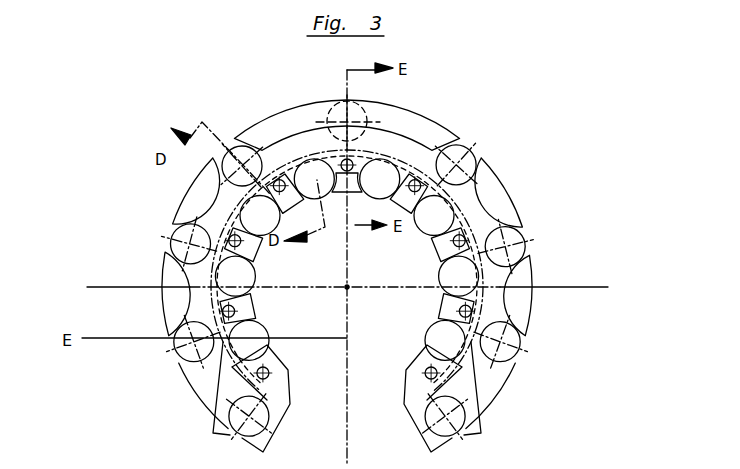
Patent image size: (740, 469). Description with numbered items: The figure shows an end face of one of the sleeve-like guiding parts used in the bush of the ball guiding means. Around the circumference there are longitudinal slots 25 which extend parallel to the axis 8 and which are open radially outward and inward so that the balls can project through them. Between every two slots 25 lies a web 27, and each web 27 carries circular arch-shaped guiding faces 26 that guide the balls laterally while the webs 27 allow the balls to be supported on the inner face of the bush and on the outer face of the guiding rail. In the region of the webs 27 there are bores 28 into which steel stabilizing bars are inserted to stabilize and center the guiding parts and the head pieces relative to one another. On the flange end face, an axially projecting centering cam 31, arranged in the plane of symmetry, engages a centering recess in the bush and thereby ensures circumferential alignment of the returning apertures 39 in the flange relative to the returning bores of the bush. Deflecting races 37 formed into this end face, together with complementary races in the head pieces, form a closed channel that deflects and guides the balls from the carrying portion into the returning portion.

The axis 8 is at (347, 287).
The longitudinal slots 25 is at (346, 288).
The guiding faces 26 is at (190, 243).
The webs 27 is at (212, 435).
The bores 28 is at (430, 364).
The centering cam 31 is at (357, 113).
The deflecting races 37 is at (479, 222).
The returning apertures 39 is at (242, 168).